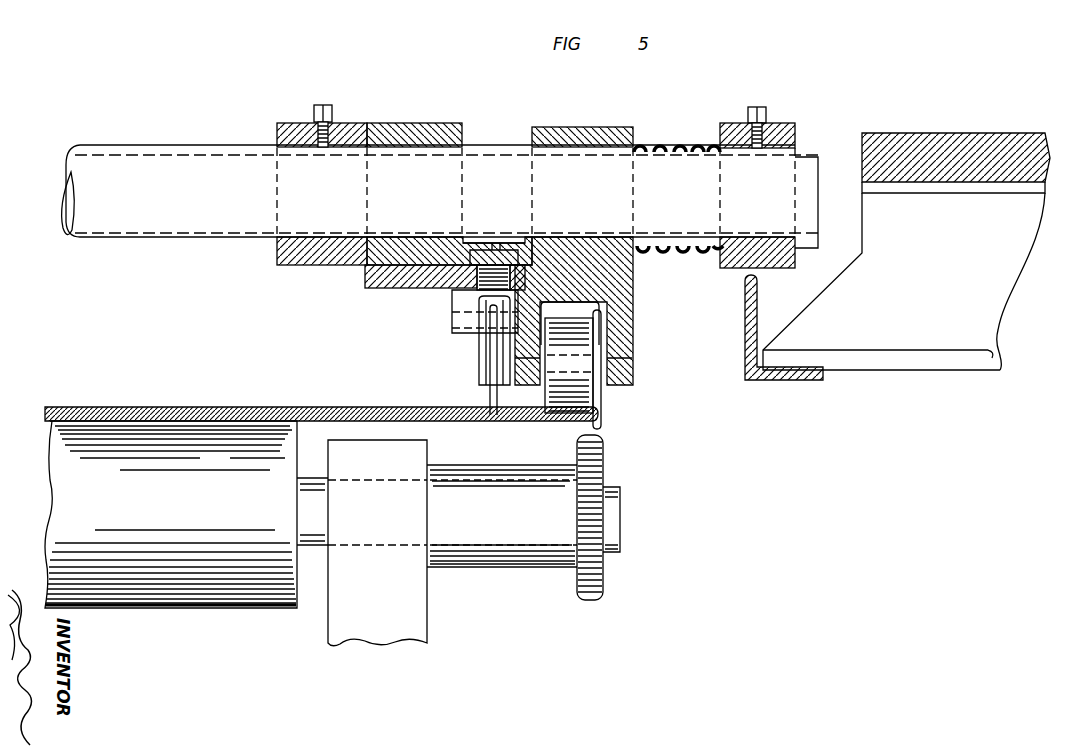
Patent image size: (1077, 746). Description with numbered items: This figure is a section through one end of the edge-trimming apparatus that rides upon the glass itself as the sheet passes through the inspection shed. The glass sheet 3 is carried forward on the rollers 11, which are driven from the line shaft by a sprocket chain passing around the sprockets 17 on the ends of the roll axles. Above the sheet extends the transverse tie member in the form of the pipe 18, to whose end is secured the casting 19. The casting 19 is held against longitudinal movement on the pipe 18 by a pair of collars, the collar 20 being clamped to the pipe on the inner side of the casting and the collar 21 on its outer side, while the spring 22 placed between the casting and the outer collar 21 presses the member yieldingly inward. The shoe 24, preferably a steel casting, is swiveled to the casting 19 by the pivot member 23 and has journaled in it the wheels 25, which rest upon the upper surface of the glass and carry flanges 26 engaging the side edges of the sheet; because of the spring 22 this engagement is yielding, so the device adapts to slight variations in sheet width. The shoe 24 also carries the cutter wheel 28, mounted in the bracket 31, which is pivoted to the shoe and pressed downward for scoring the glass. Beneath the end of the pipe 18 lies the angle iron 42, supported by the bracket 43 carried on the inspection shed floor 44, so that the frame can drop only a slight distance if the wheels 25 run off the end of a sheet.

The sheet of glass 3 is at (166, 407).
The roller 11 is at (243, 605).
The sprocket 17 is at (602, 578).
The pipe 18 is at (75, 180).
The casting 19 is at (428, 124).
The collar 20 is at (277, 128).
The collar 21 is at (732, 128).
The spring 22 is at (690, 258).
The pivot member 23 is at (462, 295).
The shoe 24 is at (404, 290).
The wheel 25 is at (578, 393).
The flange 26 is at (603, 424).
The cutter wheel 28 is at (488, 395).
The bracket 31 is at (478, 345).
The angle iron 42 is at (744, 318).
The bracket 43 is at (918, 340).
The inspection shed floor 44 is at (956, 170).